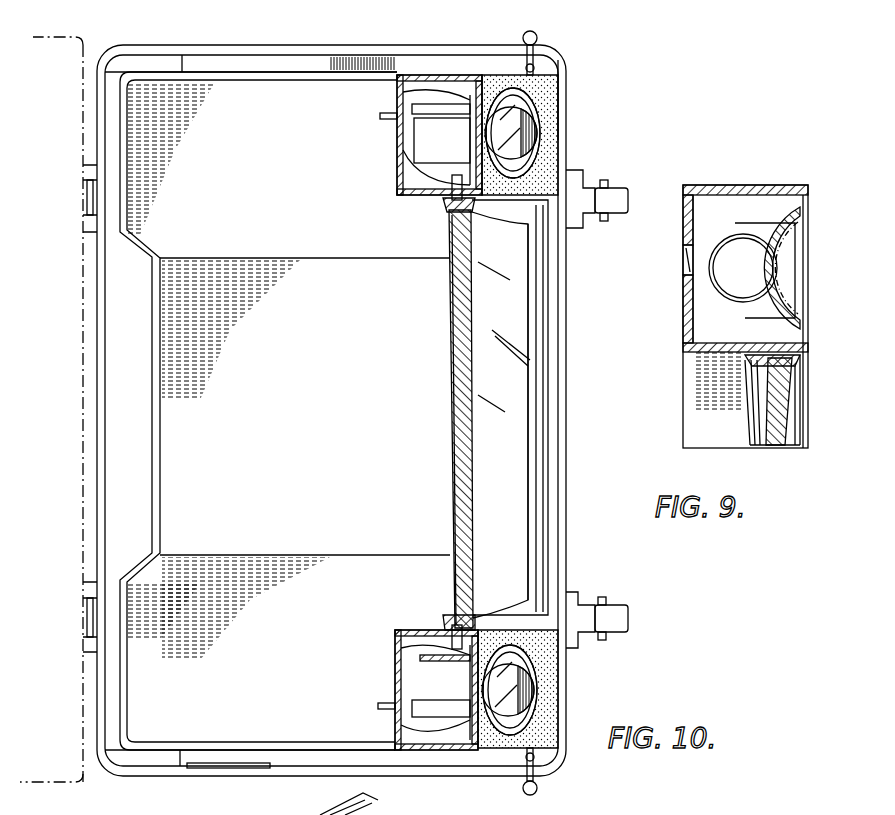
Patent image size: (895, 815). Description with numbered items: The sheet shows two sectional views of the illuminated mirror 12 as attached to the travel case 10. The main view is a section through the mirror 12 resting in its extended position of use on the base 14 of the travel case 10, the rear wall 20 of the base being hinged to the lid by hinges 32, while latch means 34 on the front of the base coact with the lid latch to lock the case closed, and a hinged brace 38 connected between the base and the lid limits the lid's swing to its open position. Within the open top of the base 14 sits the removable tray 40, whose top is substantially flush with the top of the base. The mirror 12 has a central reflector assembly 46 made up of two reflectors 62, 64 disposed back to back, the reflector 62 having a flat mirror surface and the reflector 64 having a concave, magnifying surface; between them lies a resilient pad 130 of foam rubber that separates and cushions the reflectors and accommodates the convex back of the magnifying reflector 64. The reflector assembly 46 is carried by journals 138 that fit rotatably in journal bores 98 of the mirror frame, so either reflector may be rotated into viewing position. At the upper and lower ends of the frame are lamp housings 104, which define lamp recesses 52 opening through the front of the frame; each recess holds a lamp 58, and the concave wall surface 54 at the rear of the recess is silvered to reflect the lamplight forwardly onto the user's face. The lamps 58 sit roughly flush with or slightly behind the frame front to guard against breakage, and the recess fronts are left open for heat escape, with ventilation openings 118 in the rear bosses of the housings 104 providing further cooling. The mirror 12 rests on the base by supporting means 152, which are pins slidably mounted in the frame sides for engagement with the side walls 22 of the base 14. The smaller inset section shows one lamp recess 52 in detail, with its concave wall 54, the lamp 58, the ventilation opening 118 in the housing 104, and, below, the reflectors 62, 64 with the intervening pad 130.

In FIG. 10, the travel case 10 is at (580, 55).
In FIG. 10, the mirror 12 is at (566, 385).
In FIG. 10, the base 14 is at (572, 73).
In FIG. 10, the rear wall 20 is at (97, 423).
In FIG. 10, the side walls 22 is at (298, 45).
In FIG. 10, the hinges 32 is at (90, 190).
In FIG. 10, the latch means 34 is at (583, 176).
In FIG. 10, the hinged brace 38 is at (203, 760).
In FIG. 10, the removable tray 40 is at (285, 411).
In FIG. 10, the central reflector assembly 46 is at (527, 430).
In FIG. 10, the lamp recesses 52 is at (530, 108).
In FIG. 9, the lamp recesses 52 is at (776, 236).
In FIG. 9, the concave wall surfaces 54 is at (796, 326).
In FIG. 10, the lamp 58 is at (505, 692).
In FIG. 9, the lamp 58 is at (786, 306).
In FIG. 10, the reflector 62 is at (508, 470).
In FIG. 9, the reflector 62 is at (797, 401).
In FIG. 10, the reflector 64 is at (453, 462).
In FIG. 9, the reflector 64 is at (770, 421).
In FIG. 10, the journal bores 98 is at (450, 230).
In FIG. 10, the lamp housings 104 is at (425, 135).
In FIG. 9, the lamp housings 104 is at (700, 320).
In FIG. 9, the ventilation openings 118 is at (690, 278).
In FIG. 10, the resilient pad 130 is at (453, 582).
In FIG. 9, the resilient pad 130 is at (780, 446).
In FIG. 10, the journals 138 is at (450, 195).
In FIG. 10, the supporting means 152 is at (522, 40).